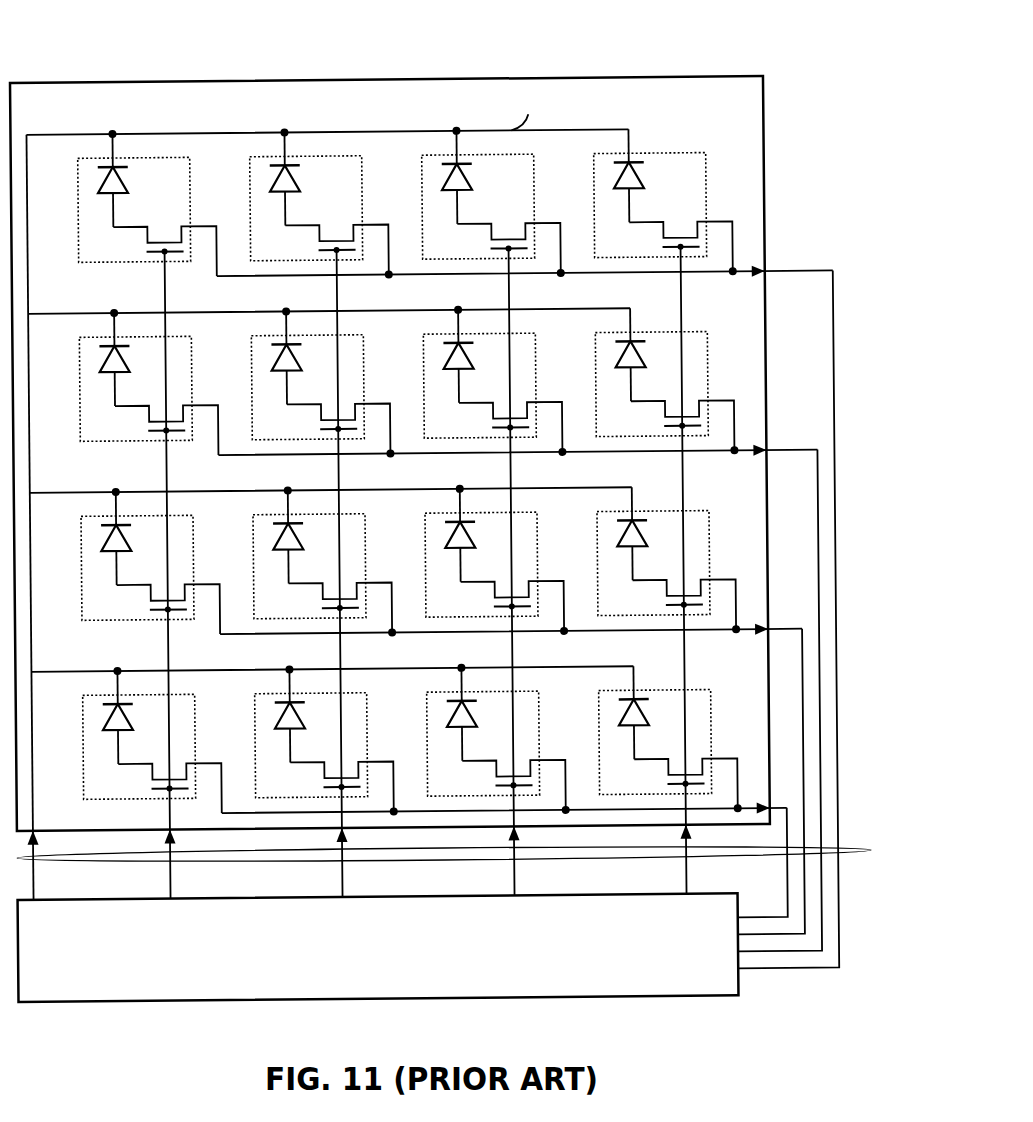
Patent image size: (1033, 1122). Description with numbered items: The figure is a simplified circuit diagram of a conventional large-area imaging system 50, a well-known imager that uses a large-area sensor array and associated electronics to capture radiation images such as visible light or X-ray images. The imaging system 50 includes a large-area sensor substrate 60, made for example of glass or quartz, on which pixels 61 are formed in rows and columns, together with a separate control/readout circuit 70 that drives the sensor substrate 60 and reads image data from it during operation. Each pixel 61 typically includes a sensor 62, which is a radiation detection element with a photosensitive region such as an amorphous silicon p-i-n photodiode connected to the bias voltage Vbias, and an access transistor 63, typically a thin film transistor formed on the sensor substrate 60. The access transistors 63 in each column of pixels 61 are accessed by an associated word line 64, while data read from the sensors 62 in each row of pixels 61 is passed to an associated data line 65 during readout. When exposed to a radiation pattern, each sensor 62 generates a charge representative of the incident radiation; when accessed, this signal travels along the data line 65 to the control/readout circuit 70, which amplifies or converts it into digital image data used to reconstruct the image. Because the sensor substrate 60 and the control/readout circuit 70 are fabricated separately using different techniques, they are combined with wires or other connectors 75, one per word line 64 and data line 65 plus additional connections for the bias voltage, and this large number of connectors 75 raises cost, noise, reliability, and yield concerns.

The large-area imaging system 50 is at (722, 53).
The sensor substrate 60 is at (370, 118).
The pixel 61 is at (112, 256).
The sensor 62 is at (127, 180).
The access transistor 63 is at (166, 246).
The word line 64 is at (163, 310).
The data line 65 is at (232, 278).
The control/readout circuit 70 is at (517, 962).
The connectors 75 is at (863, 857).